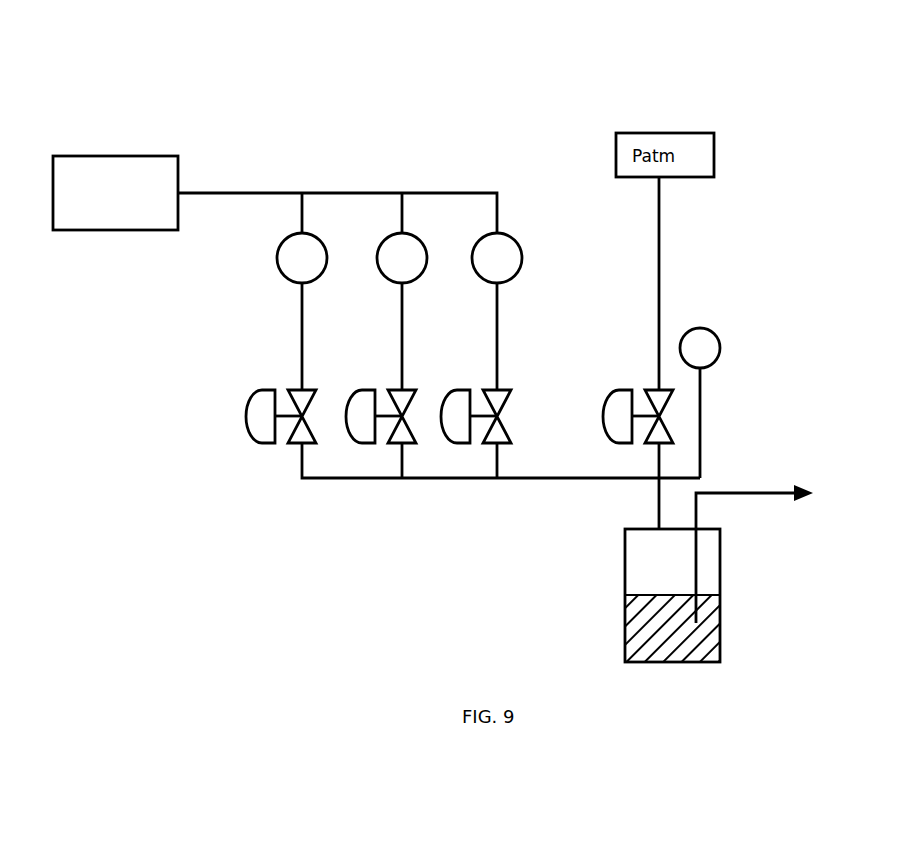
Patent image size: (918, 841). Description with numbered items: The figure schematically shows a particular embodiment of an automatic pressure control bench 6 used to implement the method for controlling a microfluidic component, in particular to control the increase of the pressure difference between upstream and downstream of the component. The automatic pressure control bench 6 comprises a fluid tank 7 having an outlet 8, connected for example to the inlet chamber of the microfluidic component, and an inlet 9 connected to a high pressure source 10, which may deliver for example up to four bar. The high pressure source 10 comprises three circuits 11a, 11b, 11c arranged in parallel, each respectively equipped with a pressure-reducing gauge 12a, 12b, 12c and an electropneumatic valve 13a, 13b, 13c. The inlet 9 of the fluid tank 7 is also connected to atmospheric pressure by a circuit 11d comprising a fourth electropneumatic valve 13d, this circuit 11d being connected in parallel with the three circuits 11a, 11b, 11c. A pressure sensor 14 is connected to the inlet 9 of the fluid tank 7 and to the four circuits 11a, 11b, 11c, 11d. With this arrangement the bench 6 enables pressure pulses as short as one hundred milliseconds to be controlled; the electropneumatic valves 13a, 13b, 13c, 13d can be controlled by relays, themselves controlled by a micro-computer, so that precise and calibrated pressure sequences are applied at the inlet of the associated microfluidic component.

The automatic pressure control bench 6 is at (297, 103).
The fluid tank 7 is at (625, 567).
The outlet 8 is at (763, 494).
The inlet 9 is at (650, 494).
The high pressure source 10 is at (147, 156).
The circuit 11a is at (291, 341).
The circuit 11b is at (391, 346).
The circuit 11c is at (486, 340).
The circuit 11d is at (648, 305).
The pressure-reducing gauge 12a is at (278, 259).
The pressure-reducing gauge 12b is at (379, 252).
The pressure-reducing gauge 12c is at (483, 250).
The electropneumatic valve 13a is at (247, 432).
The electropneumatic valve 13b is at (350, 438).
The electropneumatic valve 13c is at (448, 440).
The fourth electropneumatic valve 13d is at (603, 425).
The pressure sensor 14 is at (718, 340).